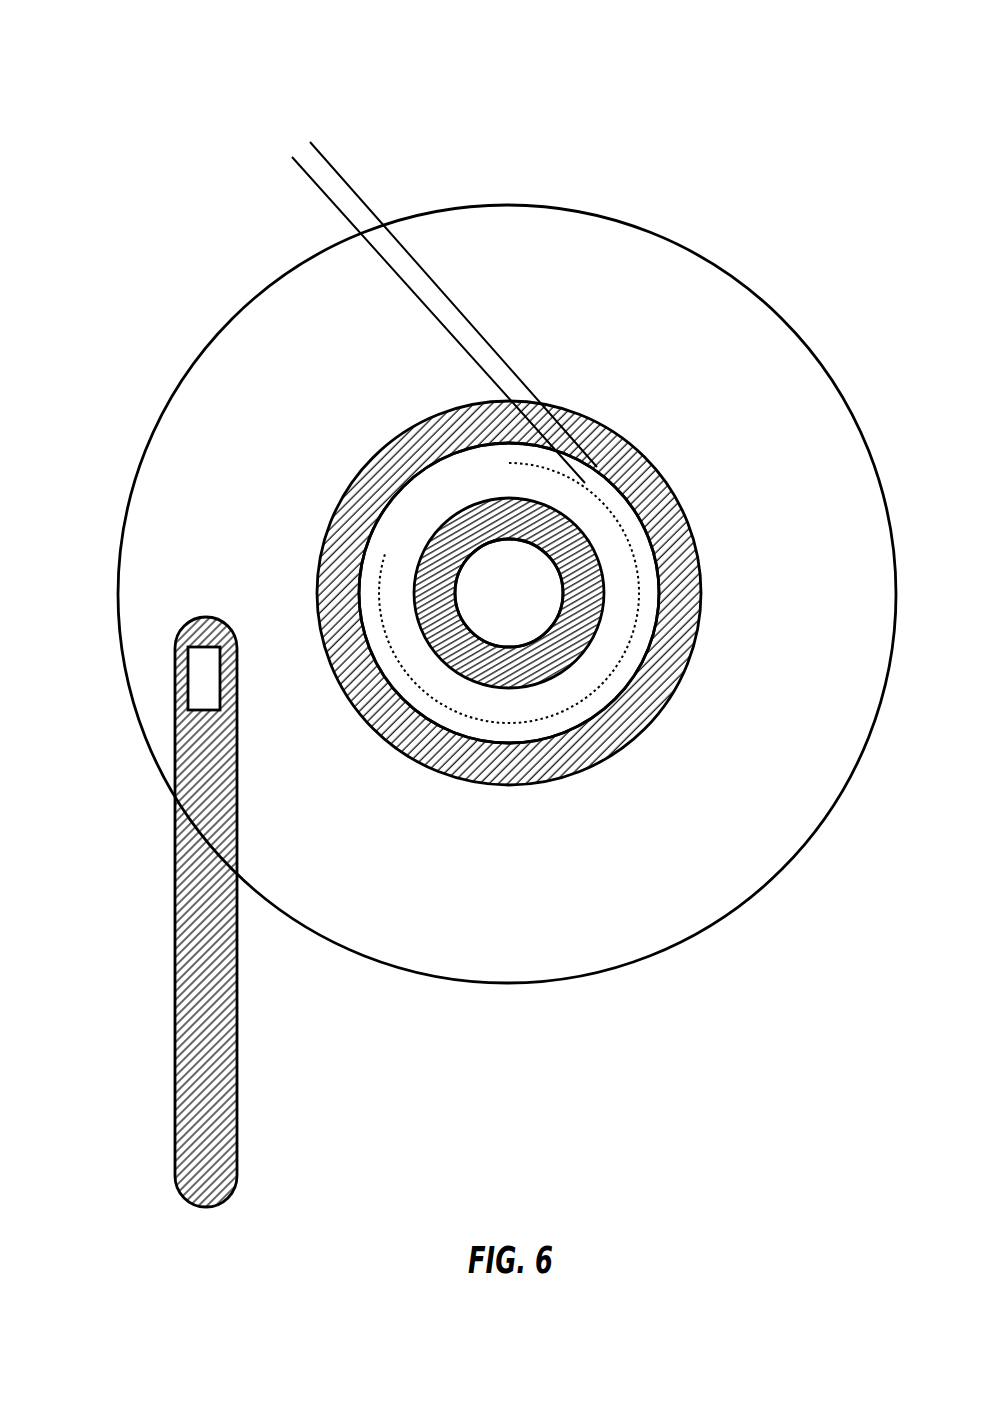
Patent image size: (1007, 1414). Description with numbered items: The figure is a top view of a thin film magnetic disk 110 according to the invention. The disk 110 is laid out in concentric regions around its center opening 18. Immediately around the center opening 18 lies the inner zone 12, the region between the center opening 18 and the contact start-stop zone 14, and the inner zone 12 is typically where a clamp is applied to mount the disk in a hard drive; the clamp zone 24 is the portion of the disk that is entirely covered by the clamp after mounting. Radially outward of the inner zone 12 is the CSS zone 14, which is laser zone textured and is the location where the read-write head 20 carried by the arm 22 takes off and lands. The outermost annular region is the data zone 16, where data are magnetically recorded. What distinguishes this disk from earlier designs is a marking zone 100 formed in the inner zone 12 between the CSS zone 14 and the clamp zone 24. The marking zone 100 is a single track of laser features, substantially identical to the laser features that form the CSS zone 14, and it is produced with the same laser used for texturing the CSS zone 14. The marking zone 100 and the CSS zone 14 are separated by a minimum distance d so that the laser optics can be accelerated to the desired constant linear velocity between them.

The disk 110 is at (160, 54).
The inner zone 12 is at (407, 513).
The contact start-stop zone 14 is at (665, 502).
The data zone 16 is at (800, 357).
The center opening 18 is at (567, 588).
The read-write head 20 is at (188, 688).
The arm 22 is at (158, 980).
The clamp zone 24 is at (567, 623).
The marking zone 100 is at (622, 663).
The minimum distance d is at (258, 197).